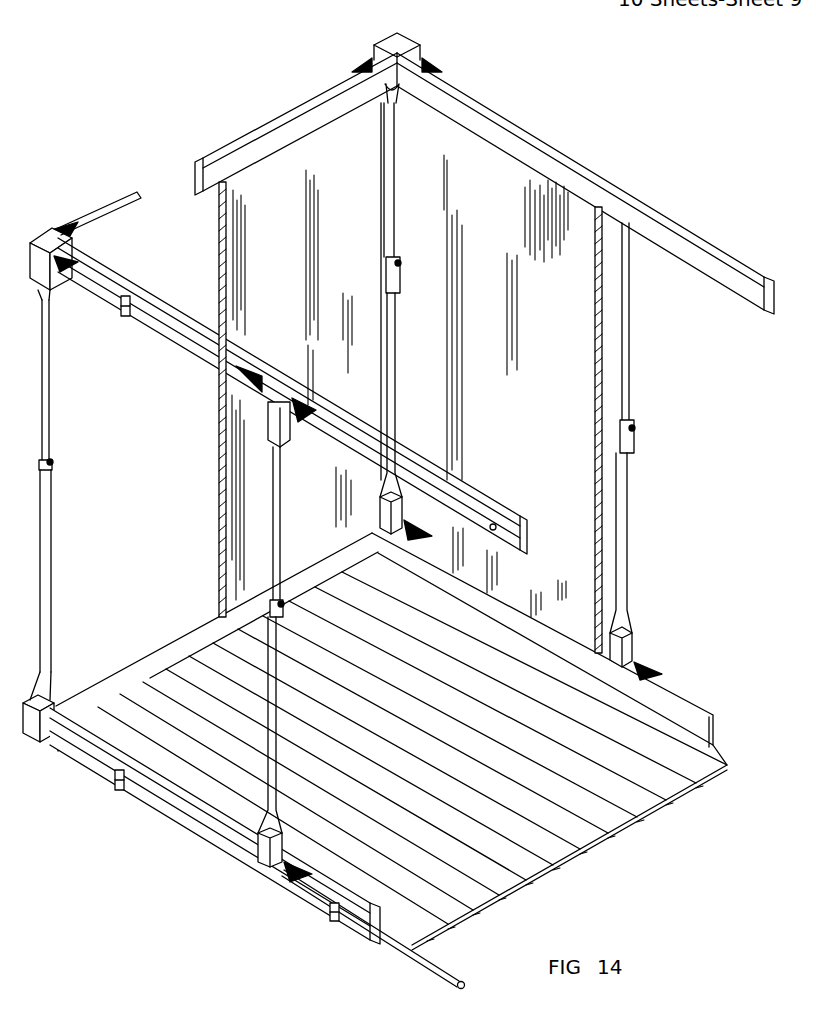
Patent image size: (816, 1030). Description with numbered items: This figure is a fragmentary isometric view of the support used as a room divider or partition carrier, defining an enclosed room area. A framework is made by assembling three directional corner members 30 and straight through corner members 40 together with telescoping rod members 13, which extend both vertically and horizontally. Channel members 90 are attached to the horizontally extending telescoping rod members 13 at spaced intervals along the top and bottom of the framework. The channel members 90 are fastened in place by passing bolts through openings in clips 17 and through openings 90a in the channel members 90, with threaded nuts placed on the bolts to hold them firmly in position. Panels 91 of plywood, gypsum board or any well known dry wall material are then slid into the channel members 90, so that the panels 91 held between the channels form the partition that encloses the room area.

The telescoping rod member 13 is at (118, 205).
The clip 17 is at (133, 318).
The three directional corner member 30 is at (45, 243).
The straight through corner member 40 is at (290, 423).
The channel member 90 is at (102, 262).
The opening 90a is at (347, 95).
The panel 91 is at (278, 300).